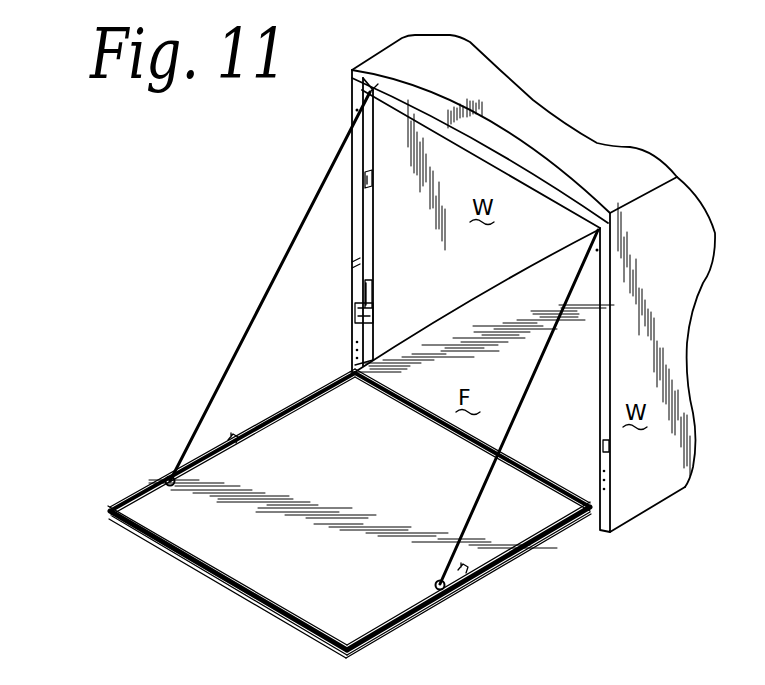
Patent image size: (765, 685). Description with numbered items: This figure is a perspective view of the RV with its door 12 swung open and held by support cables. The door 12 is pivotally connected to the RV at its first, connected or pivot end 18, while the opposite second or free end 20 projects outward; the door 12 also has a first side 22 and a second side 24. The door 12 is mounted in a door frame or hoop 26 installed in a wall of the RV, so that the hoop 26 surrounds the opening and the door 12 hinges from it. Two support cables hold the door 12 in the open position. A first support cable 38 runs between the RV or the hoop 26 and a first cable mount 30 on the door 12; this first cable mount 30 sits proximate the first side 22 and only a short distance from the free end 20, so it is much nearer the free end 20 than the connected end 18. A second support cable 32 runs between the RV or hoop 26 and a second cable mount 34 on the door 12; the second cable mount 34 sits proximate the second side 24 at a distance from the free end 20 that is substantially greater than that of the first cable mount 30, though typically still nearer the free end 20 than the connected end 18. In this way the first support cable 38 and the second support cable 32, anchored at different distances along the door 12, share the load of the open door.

The door 12 is at (314, 485).
The first (connected or pivot) end 18 is at (592, 527).
The second (free) end 20 is at (246, 612).
The first side 22 is at (107, 479).
The second side 24 is at (518, 628).
The door frame (hoop) 26 is at (450, 133).
The first cable mount 30 is at (166, 478).
The second support cable 32 is at (530, 373).
The second cable mount 34 is at (436, 582).
The cable 38 is at (250, 322).